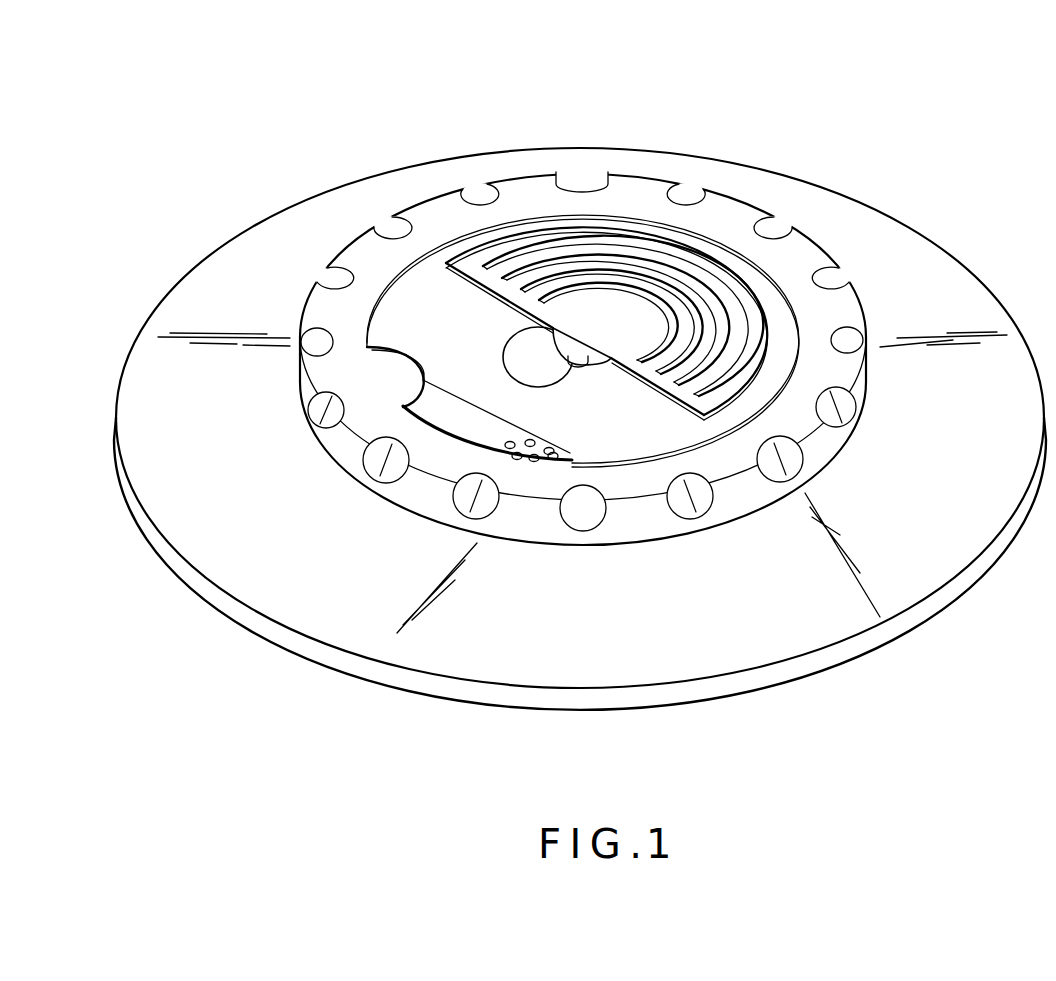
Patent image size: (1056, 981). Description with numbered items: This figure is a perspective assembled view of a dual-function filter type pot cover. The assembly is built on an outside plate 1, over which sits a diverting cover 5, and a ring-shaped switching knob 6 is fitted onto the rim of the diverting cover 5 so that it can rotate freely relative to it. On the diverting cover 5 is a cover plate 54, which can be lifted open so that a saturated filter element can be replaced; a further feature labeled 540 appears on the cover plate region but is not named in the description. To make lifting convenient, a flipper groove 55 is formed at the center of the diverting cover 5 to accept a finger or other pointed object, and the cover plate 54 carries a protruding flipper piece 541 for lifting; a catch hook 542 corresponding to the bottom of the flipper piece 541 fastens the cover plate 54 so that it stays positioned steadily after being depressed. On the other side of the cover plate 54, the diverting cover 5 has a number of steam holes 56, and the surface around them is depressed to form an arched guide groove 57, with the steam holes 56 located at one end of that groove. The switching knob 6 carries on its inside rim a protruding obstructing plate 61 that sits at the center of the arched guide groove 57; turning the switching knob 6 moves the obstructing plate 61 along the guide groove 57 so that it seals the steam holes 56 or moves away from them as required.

The outside plate 1 is at (922, 256).
The diverting cover 5 is at (626, 432).
The switching knob 6 is at (845, 197).
The cover plate 54 is at (635, 243).
The heating grooves 540 is at (675, 263).
The flipper piece 541 is at (577, 343).
The catch hook 542 is at (538, 447).
The flipper groove 55 is at (533, 363).
The steam holes 56 is at (497, 446).
The arched guide groove 57 is at (453, 422).
The obstructing plate 61 is at (402, 370).